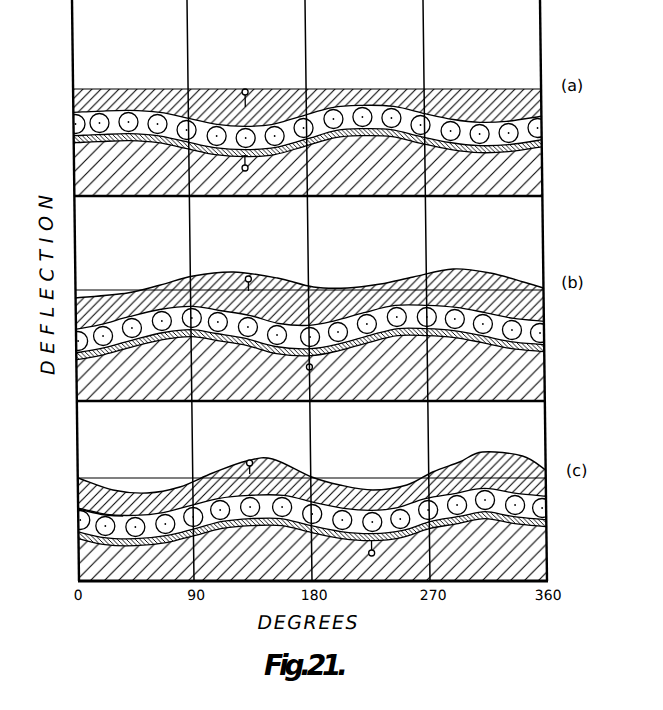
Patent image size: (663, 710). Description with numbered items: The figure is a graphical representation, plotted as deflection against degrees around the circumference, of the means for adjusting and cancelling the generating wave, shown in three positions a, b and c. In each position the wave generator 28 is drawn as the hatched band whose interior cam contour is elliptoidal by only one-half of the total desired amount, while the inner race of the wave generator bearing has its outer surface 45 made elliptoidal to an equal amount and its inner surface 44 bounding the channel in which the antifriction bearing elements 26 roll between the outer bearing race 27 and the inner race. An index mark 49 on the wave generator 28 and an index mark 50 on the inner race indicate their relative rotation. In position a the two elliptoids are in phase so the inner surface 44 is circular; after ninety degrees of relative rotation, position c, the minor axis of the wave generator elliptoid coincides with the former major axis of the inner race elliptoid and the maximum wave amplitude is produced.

The antifriction bearing element 26 is at (540, 510).
The outer bearing race 27 is at (540, 526).
The wave generator 28 is at (541, 164).
The inner surface of the inner race 44 is at (248, 88).
The outer surface of the inner race 45 is at (72, 510).
The index mark 49 is at (240, 169).
The index mark 50 is at (249, 277).